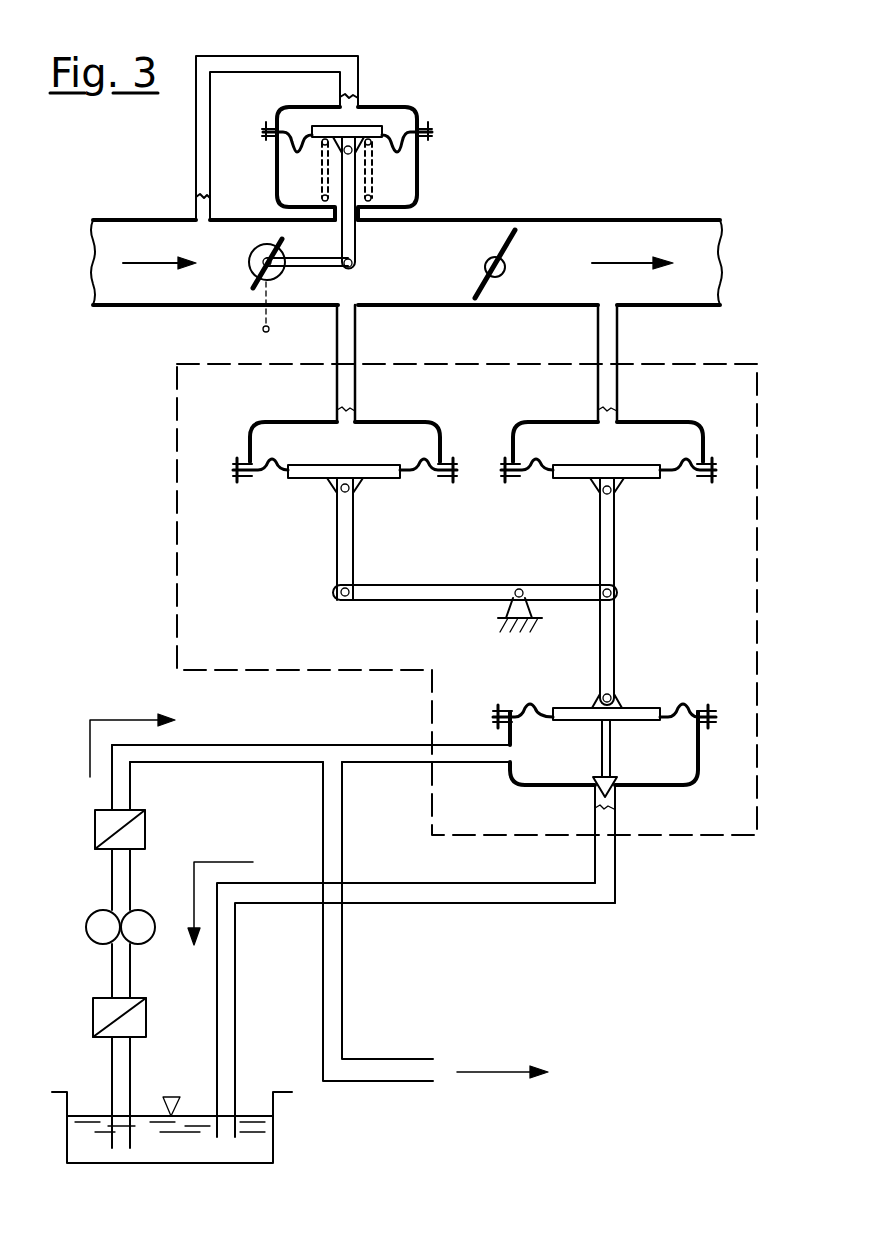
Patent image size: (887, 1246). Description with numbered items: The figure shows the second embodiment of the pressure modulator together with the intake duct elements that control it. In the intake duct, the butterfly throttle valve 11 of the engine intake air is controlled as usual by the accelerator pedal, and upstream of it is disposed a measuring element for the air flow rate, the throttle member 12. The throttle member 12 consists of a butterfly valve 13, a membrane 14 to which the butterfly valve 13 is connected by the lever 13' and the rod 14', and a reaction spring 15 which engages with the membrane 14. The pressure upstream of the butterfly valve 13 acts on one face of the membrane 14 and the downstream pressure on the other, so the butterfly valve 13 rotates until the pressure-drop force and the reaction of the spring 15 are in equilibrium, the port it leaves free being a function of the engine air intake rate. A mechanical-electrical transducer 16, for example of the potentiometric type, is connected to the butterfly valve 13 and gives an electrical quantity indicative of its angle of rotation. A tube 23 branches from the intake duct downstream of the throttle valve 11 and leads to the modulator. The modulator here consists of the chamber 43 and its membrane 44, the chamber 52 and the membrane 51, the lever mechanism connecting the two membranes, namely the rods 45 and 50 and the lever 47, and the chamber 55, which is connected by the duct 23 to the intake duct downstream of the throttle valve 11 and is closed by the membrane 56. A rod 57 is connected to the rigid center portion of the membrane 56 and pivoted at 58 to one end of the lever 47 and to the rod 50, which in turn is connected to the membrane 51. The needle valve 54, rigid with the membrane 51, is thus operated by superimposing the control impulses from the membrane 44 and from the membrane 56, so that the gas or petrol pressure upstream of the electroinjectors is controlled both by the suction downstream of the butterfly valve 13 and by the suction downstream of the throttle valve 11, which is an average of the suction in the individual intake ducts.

The butterfly throttle valve 11 is at (485, 285).
The throttle member 12 is at (334, 162).
The butterfly valve 13 is at (238, 285).
The lever 13' is at (307, 280).
The membrane 14 is at (367, 163).
The rod 14' is at (373, 203).
The reaction spring 15 is at (365, 180).
The mechanical-electrical transducer 16 is at (255, 258).
The tube 23 is at (607, 390).
The chamber 43 is at (297, 440).
The membrane 44 is at (277, 472).
The rod 45 is at (343, 551).
The lever 47 is at (424, 592).
The rod 50 is at (607, 655).
The membrane 51 is at (525, 706).
The chamber 52 is at (662, 765).
The needle valve 54 is at (602, 752).
The chamber 55 is at (558, 440).
The membrane 56 is at (539, 472).
The rod 57 is at (607, 522).
The pivot 58 is at (612, 594).